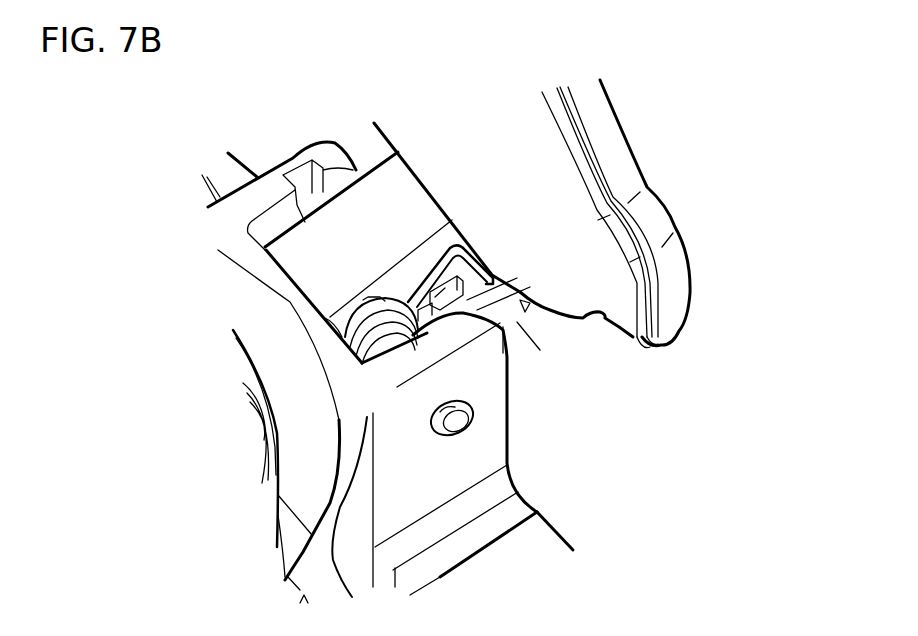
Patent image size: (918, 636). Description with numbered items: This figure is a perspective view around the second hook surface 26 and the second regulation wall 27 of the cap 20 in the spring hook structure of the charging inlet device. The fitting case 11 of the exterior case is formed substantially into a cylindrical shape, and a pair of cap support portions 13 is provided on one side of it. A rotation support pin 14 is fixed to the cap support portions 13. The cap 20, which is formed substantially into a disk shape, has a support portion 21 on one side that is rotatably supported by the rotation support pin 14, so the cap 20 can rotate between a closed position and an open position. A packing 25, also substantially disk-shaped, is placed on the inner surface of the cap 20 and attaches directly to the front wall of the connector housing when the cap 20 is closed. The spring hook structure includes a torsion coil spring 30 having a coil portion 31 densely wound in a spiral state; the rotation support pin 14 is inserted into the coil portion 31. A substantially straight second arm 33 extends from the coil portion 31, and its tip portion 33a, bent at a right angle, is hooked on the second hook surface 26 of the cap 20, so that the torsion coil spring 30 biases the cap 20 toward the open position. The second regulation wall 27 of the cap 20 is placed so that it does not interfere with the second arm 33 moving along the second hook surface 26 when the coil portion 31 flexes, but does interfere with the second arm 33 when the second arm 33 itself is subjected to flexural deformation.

The fitting case 11 is at (340, 507).
The cap support portions 13 is at (269, 176).
The rotation support pin 14 is at (377, 305).
The cap 20 is at (657, 213).
The support portion 21 is at (530, 327).
The packing 25 is at (560, 168).
The second hook surface 26 is at (478, 300).
The second regulation wall 27 is at (457, 305).
The torsion coil spring 30 is at (405, 287).
The coil portion 31 is at (368, 330).
The second arm 33 is at (437, 272).
The tip portion 33a is at (485, 250).